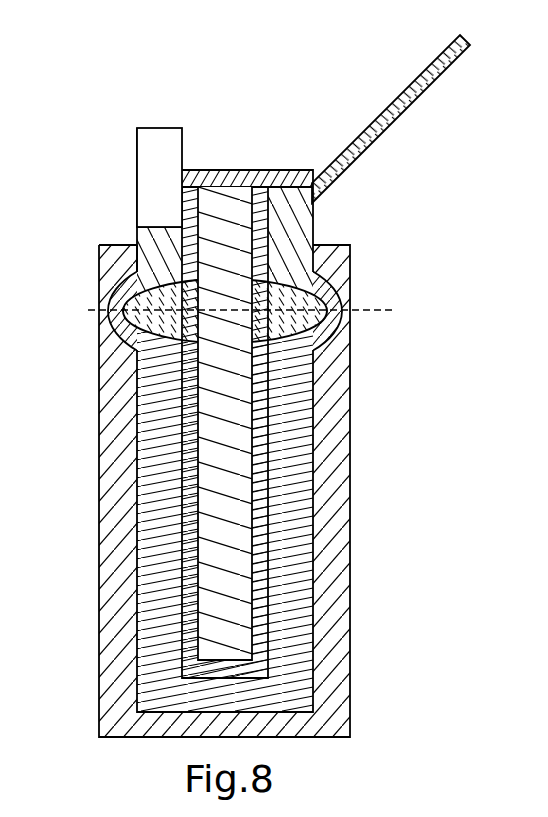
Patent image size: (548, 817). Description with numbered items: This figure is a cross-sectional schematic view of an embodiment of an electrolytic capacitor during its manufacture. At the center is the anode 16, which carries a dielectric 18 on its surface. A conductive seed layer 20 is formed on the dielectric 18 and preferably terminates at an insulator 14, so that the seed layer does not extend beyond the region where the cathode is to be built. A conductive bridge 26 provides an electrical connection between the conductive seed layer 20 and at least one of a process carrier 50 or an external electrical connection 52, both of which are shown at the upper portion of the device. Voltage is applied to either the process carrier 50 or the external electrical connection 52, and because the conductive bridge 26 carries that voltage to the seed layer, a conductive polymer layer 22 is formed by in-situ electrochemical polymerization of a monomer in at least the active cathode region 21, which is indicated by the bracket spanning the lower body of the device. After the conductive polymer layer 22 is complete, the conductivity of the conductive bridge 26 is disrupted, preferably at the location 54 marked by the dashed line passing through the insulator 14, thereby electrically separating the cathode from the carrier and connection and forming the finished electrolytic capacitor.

The insulator 14 is at (138, 316).
The anode 16 is at (214, 199).
The dielectric 18 is at (273, 409).
The conductive seed layer 20 is at (302, 381).
The active cathode region 21 is at (85, 745).
The conductive polymer layer 22 is at (332, 447).
The conductive bridge 26 is at (289, 191).
The process carrier 50 is at (145, 170).
The external electrical connection 52 is at (410, 82).
The disruption location of the conductive bridge 54 is at (385, 307).